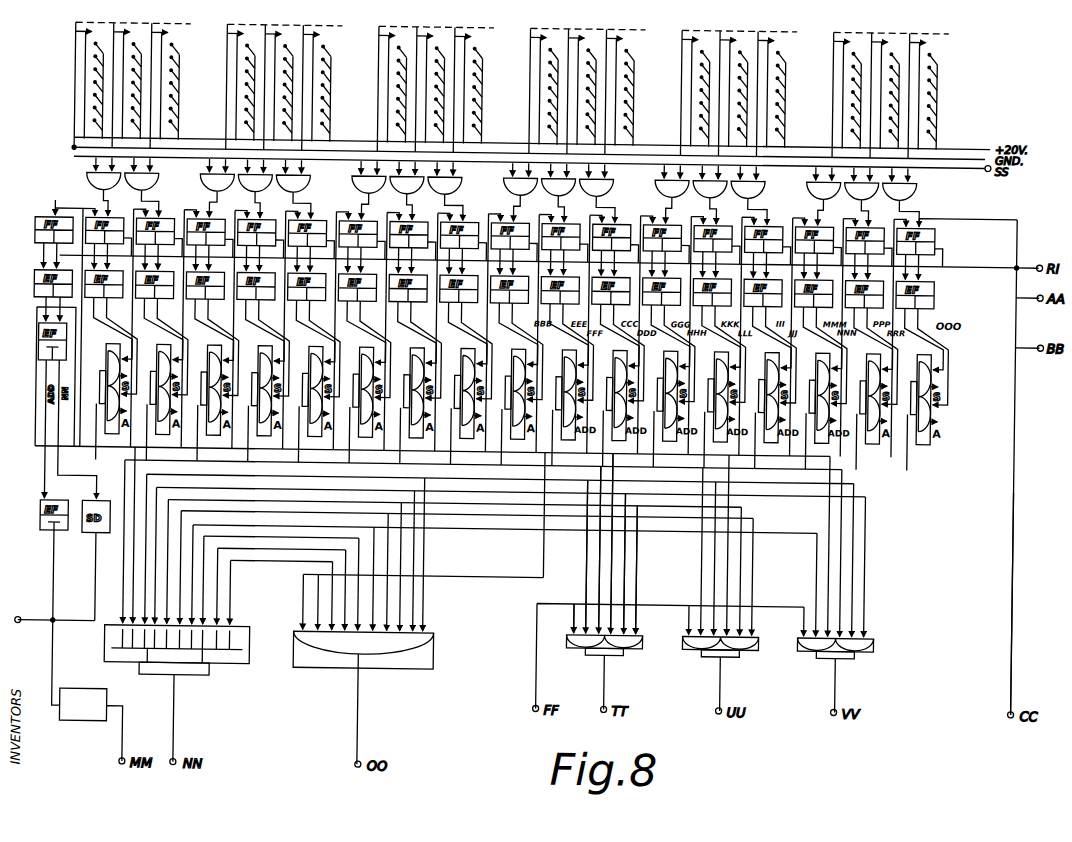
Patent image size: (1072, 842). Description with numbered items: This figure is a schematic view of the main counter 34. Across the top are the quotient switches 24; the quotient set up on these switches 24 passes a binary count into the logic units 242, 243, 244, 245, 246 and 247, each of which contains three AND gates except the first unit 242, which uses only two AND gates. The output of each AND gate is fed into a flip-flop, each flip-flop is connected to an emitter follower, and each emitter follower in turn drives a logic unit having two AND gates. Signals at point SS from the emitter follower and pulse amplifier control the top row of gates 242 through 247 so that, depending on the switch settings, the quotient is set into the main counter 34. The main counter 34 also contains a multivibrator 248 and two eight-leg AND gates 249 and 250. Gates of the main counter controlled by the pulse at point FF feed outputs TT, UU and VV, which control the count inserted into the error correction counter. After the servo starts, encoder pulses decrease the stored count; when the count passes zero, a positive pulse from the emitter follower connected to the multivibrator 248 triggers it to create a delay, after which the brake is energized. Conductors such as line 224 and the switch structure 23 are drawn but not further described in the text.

The rotary switch 23 is at (936, 85).
The switches 24 is at (831, 22).
The logic unit 242 is at (150, 183).
The logic unit 243 is at (300, 182).
The logic unit 244 is at (452, 182).
The logic unit 245 is at (602, 182).
The logic unit 246 is at (752, 182).
The logic unit 247 is at (905, 182).
The multivibrator 248 is at (88, 720).
The eight-leg AND gate 249 is at (237, 661).
The eight-leg AND gate 250 is at (420, 664).
The main counter 34 is at (1017, 461).
The conductor 224 is at (1017, 595).